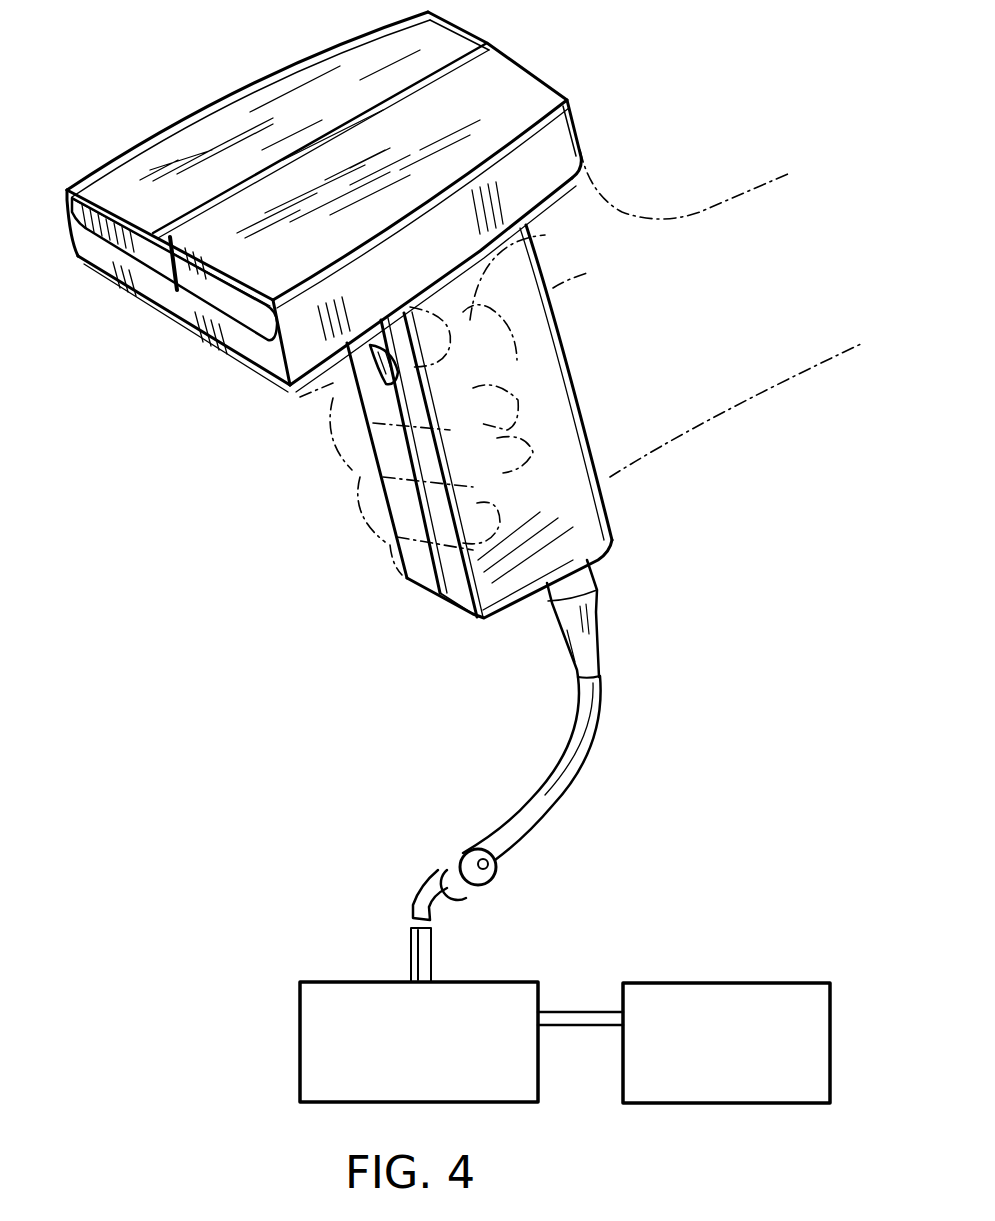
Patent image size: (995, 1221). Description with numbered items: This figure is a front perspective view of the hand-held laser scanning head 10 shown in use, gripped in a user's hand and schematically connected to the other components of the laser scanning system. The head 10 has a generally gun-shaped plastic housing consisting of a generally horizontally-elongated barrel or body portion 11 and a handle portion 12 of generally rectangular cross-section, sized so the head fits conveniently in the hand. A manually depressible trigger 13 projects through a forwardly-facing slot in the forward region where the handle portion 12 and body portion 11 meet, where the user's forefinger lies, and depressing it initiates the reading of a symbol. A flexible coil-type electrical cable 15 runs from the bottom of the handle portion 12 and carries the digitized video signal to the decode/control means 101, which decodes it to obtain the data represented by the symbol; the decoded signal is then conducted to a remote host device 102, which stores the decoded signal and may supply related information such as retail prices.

The head 10 is at (412, 313).
The body portion 11 is at (536, 72).
The handle portion 12 is at (612, 520).
The trigger 13 is at (378, 367).
The electrical cable 15 is at (597, 633).
The decode/control means 101 is at (523, 982).
The host device 102 is at (808, 983).